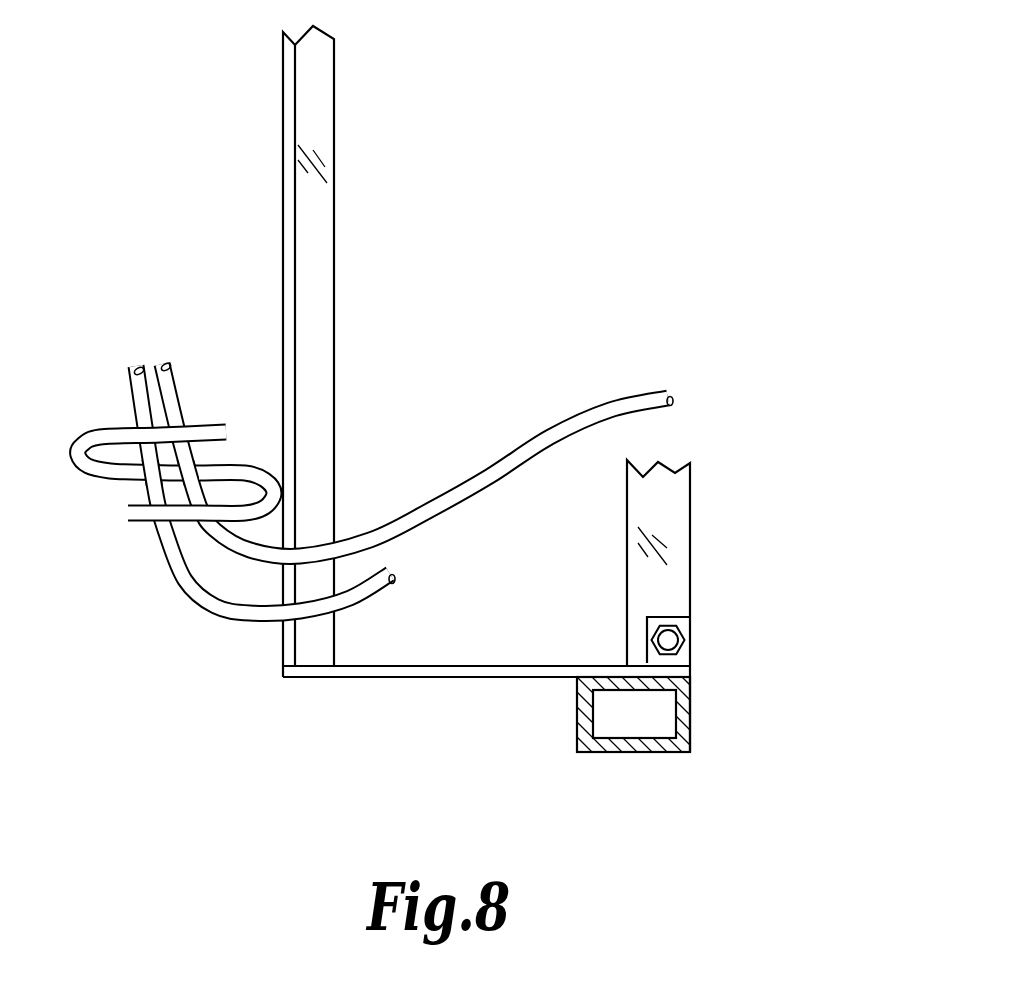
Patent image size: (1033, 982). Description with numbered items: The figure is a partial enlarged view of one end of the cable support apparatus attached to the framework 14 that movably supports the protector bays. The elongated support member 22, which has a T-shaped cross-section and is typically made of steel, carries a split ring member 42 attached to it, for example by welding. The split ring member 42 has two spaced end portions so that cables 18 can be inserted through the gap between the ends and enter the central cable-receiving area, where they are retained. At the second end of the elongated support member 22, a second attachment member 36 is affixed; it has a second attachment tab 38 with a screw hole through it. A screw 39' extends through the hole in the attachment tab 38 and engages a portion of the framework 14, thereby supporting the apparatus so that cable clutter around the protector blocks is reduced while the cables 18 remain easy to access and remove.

The elongated support member 22 is at (360, 186).
The framework 14 is at (706, 512).
The cables 18 is at (360, 580).
The split ring member 42 is at (130, 530).
The second attachment member 36 is at (372, 677).
The second attachment tab 38 is at (666, 618).
The screw 39' is at (781, 668).